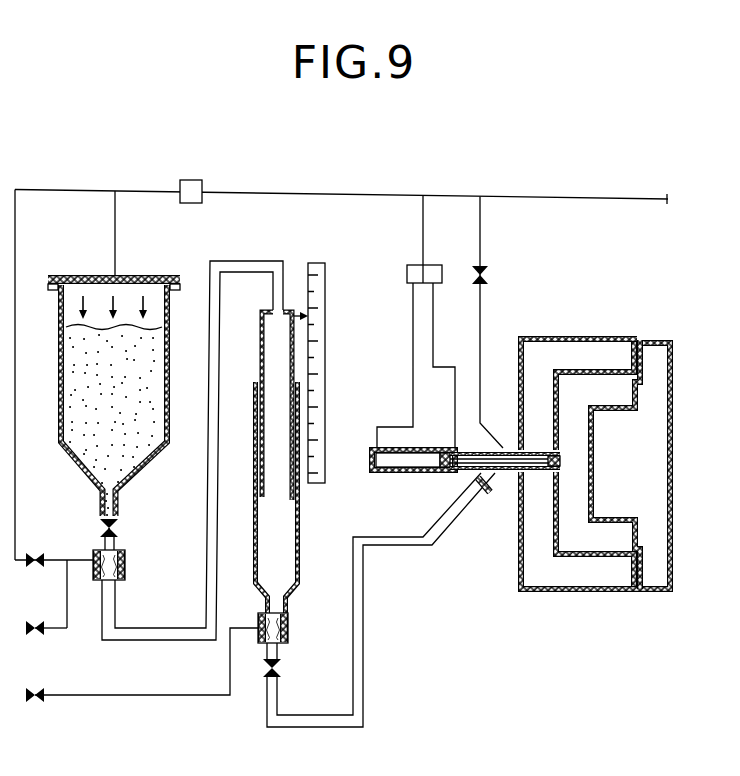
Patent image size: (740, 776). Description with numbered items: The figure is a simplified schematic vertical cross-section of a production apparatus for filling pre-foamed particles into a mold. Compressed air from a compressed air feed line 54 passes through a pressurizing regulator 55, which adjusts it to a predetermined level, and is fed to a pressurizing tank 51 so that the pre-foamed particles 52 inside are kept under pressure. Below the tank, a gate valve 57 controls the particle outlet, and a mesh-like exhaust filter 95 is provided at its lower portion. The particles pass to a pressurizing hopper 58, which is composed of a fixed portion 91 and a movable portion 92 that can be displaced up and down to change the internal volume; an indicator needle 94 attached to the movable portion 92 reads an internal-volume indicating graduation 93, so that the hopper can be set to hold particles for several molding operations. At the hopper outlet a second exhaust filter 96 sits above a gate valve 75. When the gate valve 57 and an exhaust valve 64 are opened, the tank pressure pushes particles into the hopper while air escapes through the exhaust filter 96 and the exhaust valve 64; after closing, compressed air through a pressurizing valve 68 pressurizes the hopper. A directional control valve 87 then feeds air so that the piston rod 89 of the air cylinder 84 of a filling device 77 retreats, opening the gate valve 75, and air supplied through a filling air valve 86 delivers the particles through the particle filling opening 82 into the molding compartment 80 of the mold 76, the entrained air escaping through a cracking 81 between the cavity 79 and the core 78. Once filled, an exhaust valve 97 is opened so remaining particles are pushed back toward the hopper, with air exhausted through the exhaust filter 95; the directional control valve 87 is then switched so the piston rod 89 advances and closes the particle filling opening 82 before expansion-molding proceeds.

The pressurizing tank 51 is at (140, 462).
The pre-foamed particles 52 is at (78, 404).
The compressed air feed line 54 is at (582, 198).
The pressurizing regulator 55 is at (192, 180).
The gate valve 57 is at (118, 528).
The pressurizing hopper 58 is at (300, 503).
The exhaust valve 64 is at (44, 696).
The pressurizing valve 68 is at (38, 565).
The gate valve 75 is at (287, 667).
The mold 76 is at (598, 334).
The filling device 77 is at (368, 458).
The core 78 is at (672, 412).
The cavity 79 is at (538, 336).
The molding compartment 80 is at (572, 548).
The cracking 81 is at (643, 342).
The particle filling opening 82 is at (558, 465).
The air cylinder 84 is at (406, 476).
The filling air valve 86 is at (490, 275).
The directional control valve 87 is at (410, 265).
The piston rod 89 is at (456, 476).
The fixed portion 91 is at (242, 556).
The movable portion 92 is at (262, 355).
The internal-volume indicating graduation 93 is at (325, 283).
The indicator needle 94 is at (303, 314).
The exhaust filter 95 is at (125, 565).
The exhaust filter 96 is at (290, 622).
The exhaust valve 97 is at (40, 630).